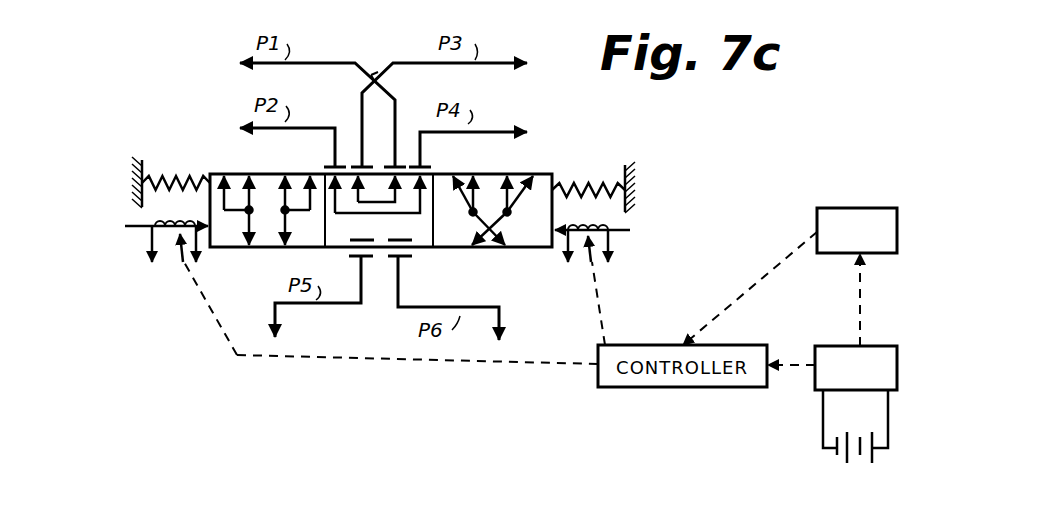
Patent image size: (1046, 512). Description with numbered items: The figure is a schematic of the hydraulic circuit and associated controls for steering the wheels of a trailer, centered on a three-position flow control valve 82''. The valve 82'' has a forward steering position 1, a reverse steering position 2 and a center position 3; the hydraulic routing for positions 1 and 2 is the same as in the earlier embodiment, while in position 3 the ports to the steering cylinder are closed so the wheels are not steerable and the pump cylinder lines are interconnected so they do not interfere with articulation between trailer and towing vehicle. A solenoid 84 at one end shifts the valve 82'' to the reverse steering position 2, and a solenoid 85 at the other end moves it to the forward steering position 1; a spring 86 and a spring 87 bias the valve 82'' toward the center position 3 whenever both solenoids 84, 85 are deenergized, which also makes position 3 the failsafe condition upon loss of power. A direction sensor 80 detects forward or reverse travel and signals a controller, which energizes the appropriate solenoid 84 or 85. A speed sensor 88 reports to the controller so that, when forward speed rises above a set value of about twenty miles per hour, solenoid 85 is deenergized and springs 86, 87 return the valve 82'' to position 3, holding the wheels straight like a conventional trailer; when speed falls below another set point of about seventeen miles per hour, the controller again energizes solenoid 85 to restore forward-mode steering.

The flow control valve 82'' is at (381, 201).
The forward steering position 1 is at (228, 252).
The reverse steering position 2 is at (510, 252).
The center position 3 is at (420, 252).
The solenoid 84 is at (612, 230).
The solenoid 85 is at (168, 222).
The spring 86 is at (170, 182).
The spring 87 is at (596, 188).
The speed sensor 88 is at (863, 222).
The direction sensor 80 is at (838, 352).